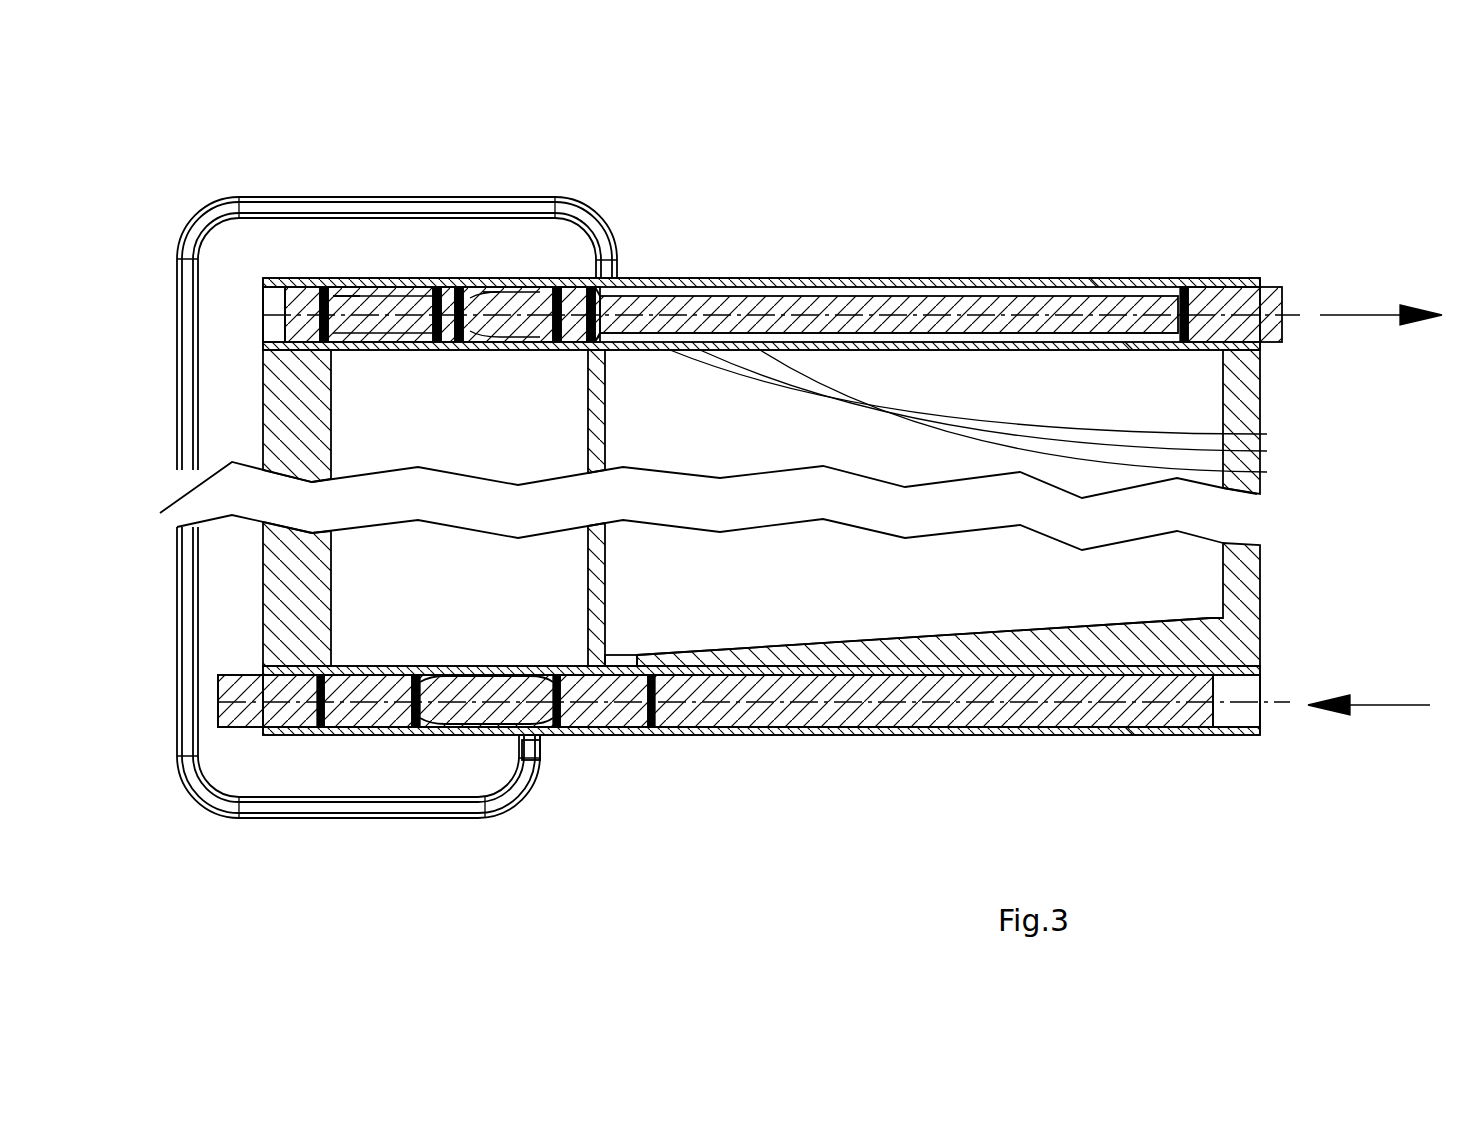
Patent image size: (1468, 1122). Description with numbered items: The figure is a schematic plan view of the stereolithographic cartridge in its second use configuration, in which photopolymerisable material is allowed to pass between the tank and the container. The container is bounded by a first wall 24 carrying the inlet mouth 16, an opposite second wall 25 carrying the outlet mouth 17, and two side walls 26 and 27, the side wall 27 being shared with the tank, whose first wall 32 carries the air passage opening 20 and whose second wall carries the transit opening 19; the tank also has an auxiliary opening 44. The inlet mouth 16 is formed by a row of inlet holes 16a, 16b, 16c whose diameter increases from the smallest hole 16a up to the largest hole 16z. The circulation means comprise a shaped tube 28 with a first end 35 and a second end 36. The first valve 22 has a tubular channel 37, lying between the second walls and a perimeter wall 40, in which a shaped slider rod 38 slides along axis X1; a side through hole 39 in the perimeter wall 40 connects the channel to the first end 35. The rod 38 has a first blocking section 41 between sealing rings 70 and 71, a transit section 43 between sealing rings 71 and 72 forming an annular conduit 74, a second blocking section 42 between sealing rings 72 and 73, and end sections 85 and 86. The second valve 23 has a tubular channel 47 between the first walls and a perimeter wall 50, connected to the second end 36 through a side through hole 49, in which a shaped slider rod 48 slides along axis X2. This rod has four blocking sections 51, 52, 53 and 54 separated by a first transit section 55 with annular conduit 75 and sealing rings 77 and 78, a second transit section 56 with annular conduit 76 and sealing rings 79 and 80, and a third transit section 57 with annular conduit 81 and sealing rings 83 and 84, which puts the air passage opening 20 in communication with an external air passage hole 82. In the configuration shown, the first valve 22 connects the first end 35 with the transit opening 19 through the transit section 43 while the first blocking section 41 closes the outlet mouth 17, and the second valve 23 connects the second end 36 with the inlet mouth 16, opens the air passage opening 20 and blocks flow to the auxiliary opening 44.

The inlet mouth 16 is at (948, 232).
The first inlet hole 16a is at (1267, 473).
The inlet hole 16b is at (1267, 451).
The inlet hole 16c is at (1267, 434).
The last inlet hole 16z is at (1130, 343).
The outlet mouth 17 is at (652, 712).
The transit opening 19 is at (437, 668).
The air passage opening 20 is at (540, 343).
The first valve 22 is at (1192, 756).
The second valve 23 is at (1102, 160).
The first wall 24 is at (1003, 340).
The second wall 25 is at (892, 658).
The side wall 26 is at (1248, 582).
The side wall 27 is at (625, 660).
The shaped tube 28 is at (183, 282).
The first wall 32 is at (430, 348).
The first end 35 is at (540, 763).
The second end 36 is at (605, 262).
The tubular channel 37 is at (1242, 688).
The shaped slider rod 38 is at (1055, 768).
The side through hole 39 is at (536, 728).
The perimeter wall 40 is at (955, 732).
The first blocking section 41 is at (615, 715).
The second blocking section 42 is at (365, 700).
The transit section 43 is at (485, 700).
The auxiliary opening 44 is at (545, 343).
The tubular channel 47 is at (776, 279).
The shaped slider rod 48 is at (1292, 241).
The side through hole 49 is at (613, 280).
The perimeter wall 50 is at (1094, 279).
The blocking section 51 is at (1290, 289).
The blocking section 52 is at (662, 300).
The blocking section 53 is at (410, 340).
The blocking section 54 is at (285, 295).
The first transit section 55 is at (875, 335).
The second transit section 56 is at (515, 300).
The third transit section 57 is at (385, 300).
The sealing ring 70 is at (597, 590).
The sealing ring 71 is at (560, 710).
The sealing ring 72 is at (410, 712).
The sealing ring 73 is at (290, 715).
The annular conduit 74 is at (530, 750).
The annular conduit 75 is at (830, 320).
The annular conduit 76 is at (475, 300).
The sealing ring 77 is at (1190, 290).
The sealing ring 78 is at (608, 300).
The sealing ring 79 is at (553, 345).
The sealing ring 80 is at (490, 300).
The annular conduit 81 is at (355, 288).
The external air passage hole 82 is at (436, 288).
The sealing ring 83 is at (458, 300).
The sealing ring 84 is at (322, 288).
The end section 85 is at (1132, 716).
The end section 86 is at (255, 690).
The main extension axis X1 is at (1280, 710).
The main extension axis X2 is at (1297, 322).